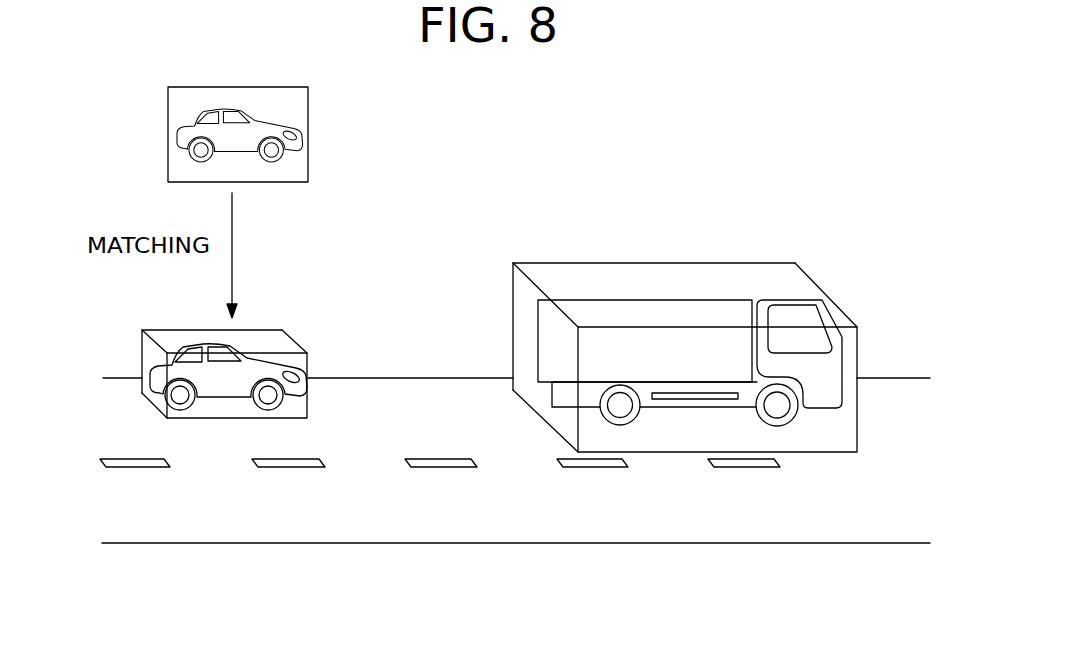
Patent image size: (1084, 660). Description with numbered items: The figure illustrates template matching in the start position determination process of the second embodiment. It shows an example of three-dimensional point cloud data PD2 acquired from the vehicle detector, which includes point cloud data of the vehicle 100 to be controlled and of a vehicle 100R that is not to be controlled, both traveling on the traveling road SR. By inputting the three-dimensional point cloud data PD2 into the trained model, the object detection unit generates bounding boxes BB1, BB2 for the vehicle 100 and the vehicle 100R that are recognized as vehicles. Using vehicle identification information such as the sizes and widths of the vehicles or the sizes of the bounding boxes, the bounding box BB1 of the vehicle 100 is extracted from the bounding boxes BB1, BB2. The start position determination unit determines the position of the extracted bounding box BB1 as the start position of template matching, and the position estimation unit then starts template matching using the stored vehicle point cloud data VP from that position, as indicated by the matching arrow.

The vehicle point cloud data VP is at (281, 121).
The three-dimensional point cloud data PD2 is at (706, 140).
The bounding box BB1 is at (273, 330).
The bounding box BB2 is at (777, 263).
The traveling road SR is at (122, 388).
The vehicle 100 is at (203, 400).
The vehicle 100R is at (660, 407).